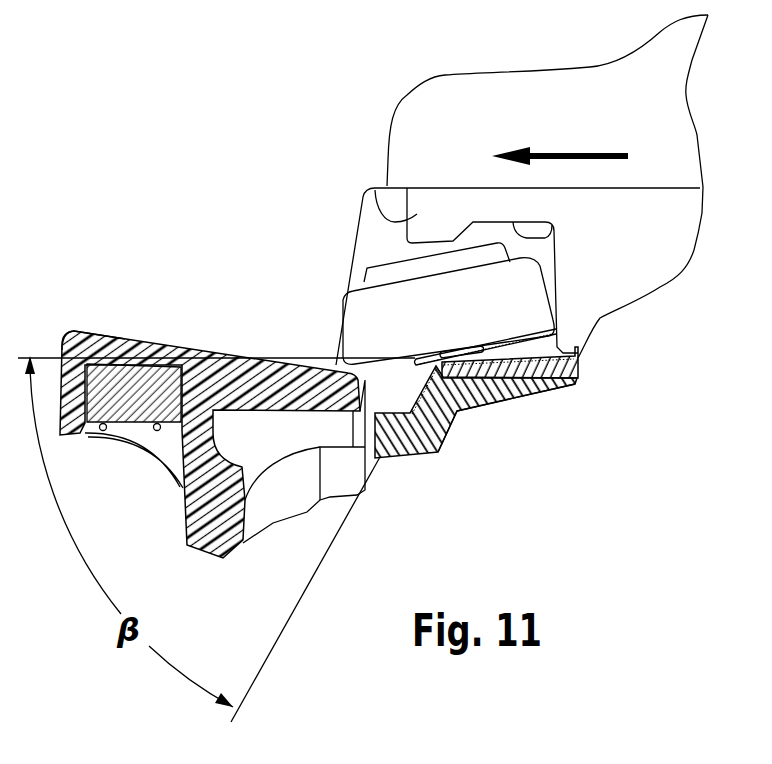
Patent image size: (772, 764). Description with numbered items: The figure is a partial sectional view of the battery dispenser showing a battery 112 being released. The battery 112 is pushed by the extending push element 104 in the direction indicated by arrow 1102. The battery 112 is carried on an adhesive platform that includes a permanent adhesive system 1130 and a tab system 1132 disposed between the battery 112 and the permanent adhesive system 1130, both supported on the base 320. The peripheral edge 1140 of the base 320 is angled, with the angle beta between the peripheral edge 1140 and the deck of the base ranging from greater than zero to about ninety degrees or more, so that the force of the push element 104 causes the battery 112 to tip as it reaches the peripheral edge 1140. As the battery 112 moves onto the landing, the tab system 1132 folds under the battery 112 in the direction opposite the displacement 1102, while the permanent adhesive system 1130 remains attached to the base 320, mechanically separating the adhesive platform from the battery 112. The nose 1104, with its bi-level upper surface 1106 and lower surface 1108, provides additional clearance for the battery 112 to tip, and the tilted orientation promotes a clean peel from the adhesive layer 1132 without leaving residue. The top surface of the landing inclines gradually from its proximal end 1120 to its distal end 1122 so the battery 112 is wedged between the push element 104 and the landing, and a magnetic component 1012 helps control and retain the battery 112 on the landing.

The push element 104 is at (457, 115).
The arrow 1102 is at (597, 153).
The nose 1104 is at (375, 187).
The upper surface 1106 is at (552, 231).
The lower surface 1108 is at (417, 250).
The battery 112 is at (373, 318).
The tab system 1132 is at (560, 342).
The permanent adhesive system 1130 is at (513, 373).
The base 320 is at (485, 390).
The peripheral edge 1140 is at (460, 418).
The proximal end 1120 is at (328, 372).
The distal end 1122 is at (88, 329).
The magnetic component 1012 is at (137, 397).